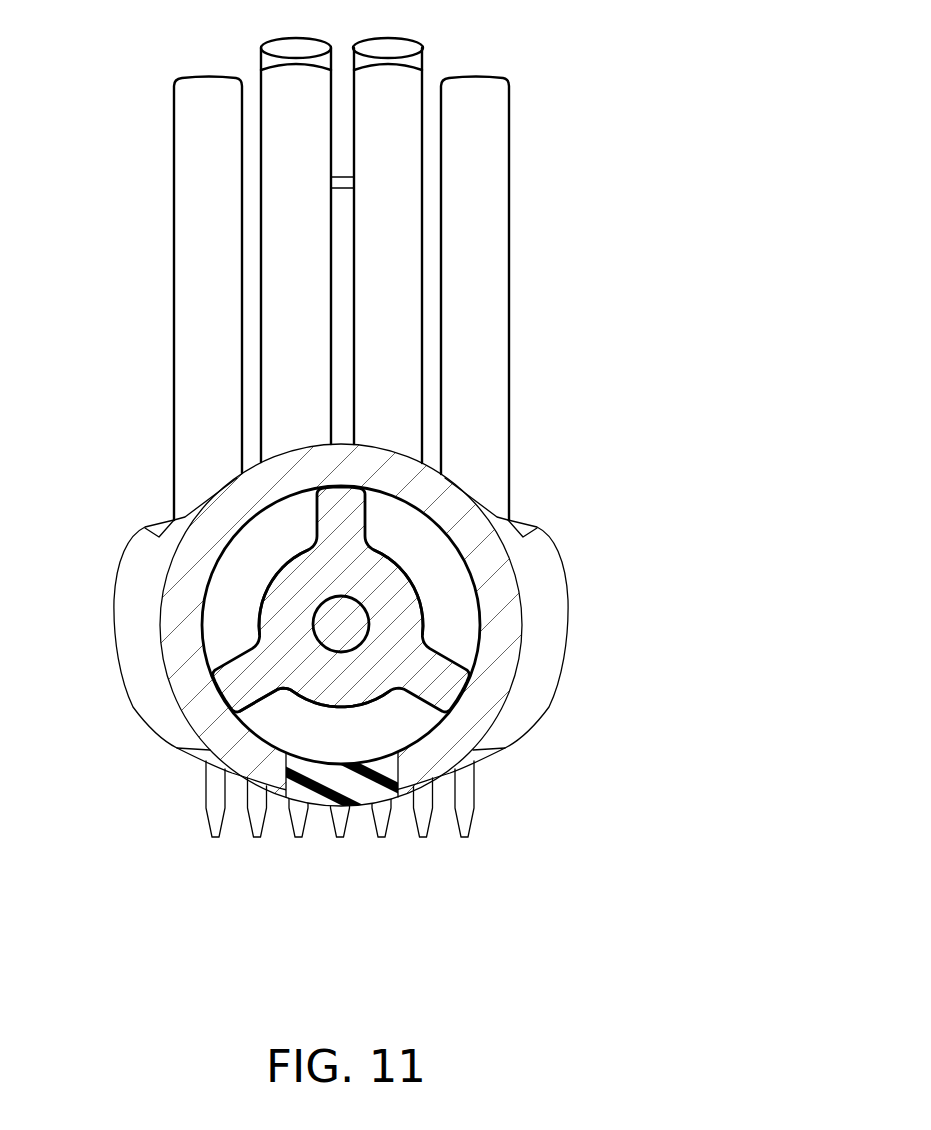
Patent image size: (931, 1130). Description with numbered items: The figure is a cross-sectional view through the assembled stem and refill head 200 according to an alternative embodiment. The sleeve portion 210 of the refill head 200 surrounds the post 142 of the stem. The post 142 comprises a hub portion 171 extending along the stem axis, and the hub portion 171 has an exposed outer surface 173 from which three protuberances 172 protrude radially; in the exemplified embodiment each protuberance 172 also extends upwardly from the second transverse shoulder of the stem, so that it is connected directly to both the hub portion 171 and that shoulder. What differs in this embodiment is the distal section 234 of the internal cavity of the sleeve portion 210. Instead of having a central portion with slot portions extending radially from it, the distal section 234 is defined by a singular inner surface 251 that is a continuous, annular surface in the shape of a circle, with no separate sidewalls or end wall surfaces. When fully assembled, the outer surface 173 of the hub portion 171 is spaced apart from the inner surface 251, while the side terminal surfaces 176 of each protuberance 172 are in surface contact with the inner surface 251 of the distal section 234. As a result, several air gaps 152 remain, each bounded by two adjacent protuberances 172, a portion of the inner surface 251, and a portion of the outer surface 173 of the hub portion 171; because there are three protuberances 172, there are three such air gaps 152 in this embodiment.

The refill head 200 is at (147, 606).
The sleeve portion 210 is at (204, 561).
The inner surface 251 is at (208, 596).
The side terminal surfaces 176 is at (343, 515).
The protuberance 172 is at (345, 540).
The outer surface 173 is at (405, 578).
The hub portion 171 is at (398, 612).
The air gaps 152 is at (230, 622).
The distal section 234 is at (280, 718).
The post 142 is at (307, 702).